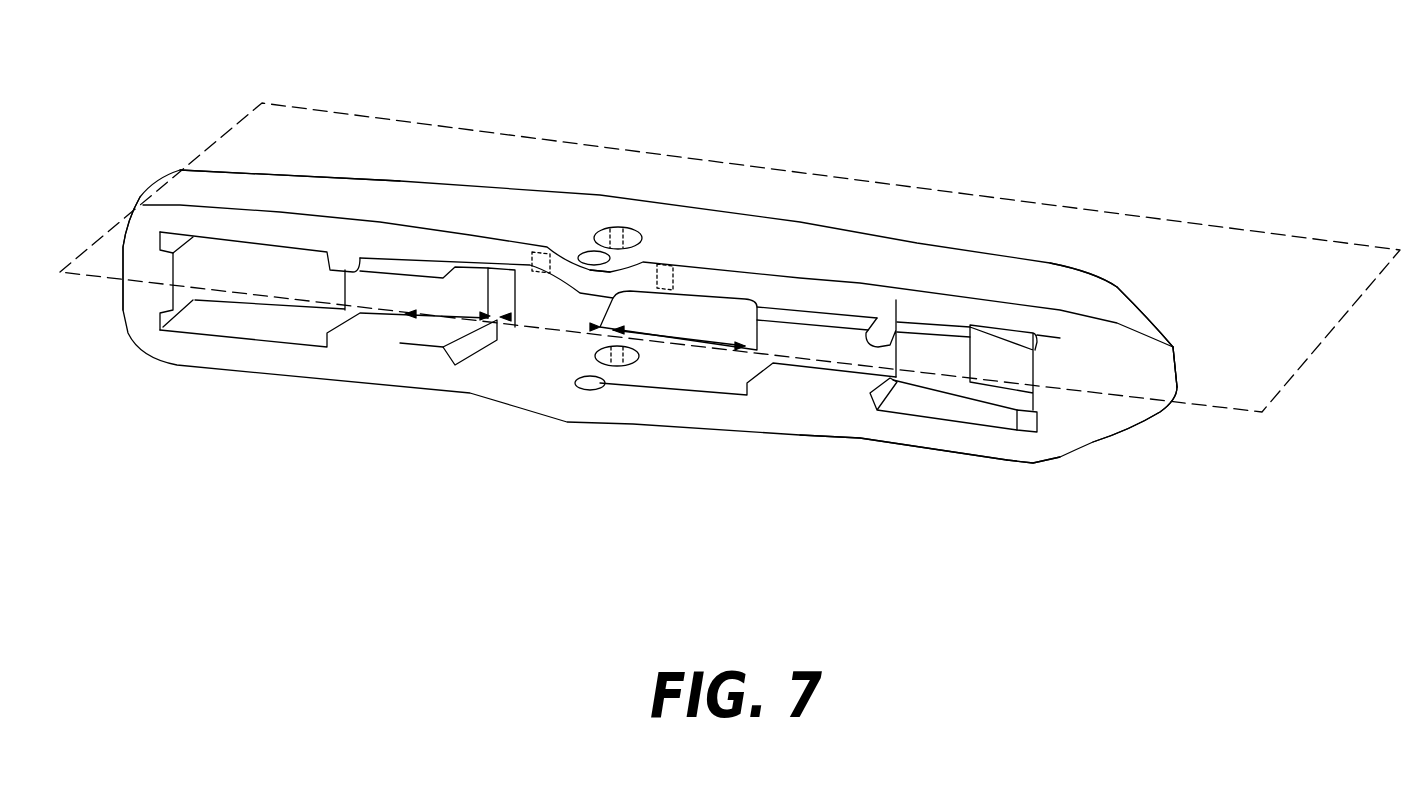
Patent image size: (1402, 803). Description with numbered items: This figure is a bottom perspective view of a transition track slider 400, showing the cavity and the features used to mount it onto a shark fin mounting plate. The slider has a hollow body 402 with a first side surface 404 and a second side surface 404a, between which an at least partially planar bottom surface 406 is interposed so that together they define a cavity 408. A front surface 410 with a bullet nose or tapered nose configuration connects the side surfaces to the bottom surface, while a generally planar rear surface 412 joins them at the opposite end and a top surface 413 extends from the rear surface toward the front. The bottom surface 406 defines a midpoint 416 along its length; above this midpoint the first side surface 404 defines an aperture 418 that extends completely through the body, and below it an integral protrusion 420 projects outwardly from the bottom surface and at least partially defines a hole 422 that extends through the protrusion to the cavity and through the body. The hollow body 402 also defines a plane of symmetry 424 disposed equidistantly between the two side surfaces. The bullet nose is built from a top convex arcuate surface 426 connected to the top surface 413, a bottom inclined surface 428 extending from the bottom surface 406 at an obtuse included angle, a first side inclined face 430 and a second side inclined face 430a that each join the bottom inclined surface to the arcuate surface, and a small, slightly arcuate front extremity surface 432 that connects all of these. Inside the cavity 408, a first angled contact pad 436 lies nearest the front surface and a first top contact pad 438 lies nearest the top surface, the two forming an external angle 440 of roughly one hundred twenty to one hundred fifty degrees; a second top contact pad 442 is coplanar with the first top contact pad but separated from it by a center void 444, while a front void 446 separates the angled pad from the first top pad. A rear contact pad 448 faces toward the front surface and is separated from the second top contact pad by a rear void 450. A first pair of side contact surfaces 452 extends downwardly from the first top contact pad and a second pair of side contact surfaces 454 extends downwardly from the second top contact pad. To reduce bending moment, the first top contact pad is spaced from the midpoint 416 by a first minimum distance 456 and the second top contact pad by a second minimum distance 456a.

The transition track slider 400 is at (742, 65).
The hollow body 402 is at (797, 206).
The first side surface 404 is at (925, 255).
The second side surface 404a is at (923, 453).
The bottom surface 406 is at (765, 418).
The cavity 408 is at (492, 330).
The front surface 410 is at (1201, 323).
The rear surface 412 is at (118, 253).
The top surface 413 is at (448, 180).
The midpoint 416 is at (635, 270).
The aperture 418 is at (613, 230).
The integral protrusion 420 is at (613, 298).
The hole 422 is at (586, 251).
The plane of symmetry 424 is at (1250, 418).
The top convex arcuate surface 426 is at (1134, 294).
The bottom inclined surface 428 is at (1093, 417).
The first side inclined face 430 is at (1090, 300).
The second side inclined face 430a is at (1137, 430).
The front extremity surface 432 is at (1178, 370).
The first angled contact pad 436 is at (966, 412).
The first top contact pad 438 is at (822, 357).
The external angle 440 is at (1000, 353).
The second top contact pad 442 is at (404, 295).
The center void 444 is at (700, 370).
The front void 446 is at (1023, 412).
The rear contact pad 448 is at (195, 237).
The rear void 450 is at (266, 343).
The first pair of side contact surfaces 452 is at (897, 313).
The second pair of side contact surfaces 454 is at (360, 258).
The first minimum distance 456 is at (672, 348).
The second minimum distance 456a is at (515, 345).